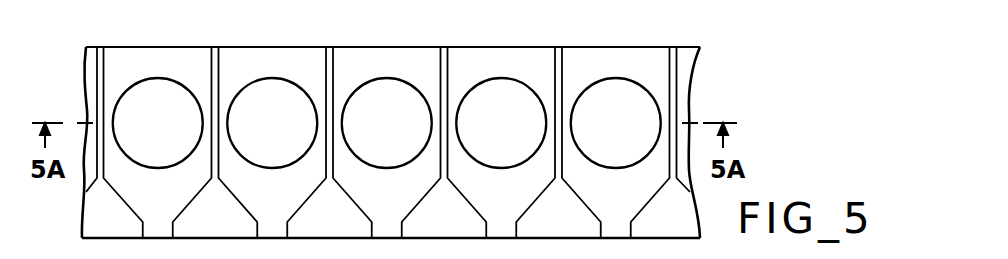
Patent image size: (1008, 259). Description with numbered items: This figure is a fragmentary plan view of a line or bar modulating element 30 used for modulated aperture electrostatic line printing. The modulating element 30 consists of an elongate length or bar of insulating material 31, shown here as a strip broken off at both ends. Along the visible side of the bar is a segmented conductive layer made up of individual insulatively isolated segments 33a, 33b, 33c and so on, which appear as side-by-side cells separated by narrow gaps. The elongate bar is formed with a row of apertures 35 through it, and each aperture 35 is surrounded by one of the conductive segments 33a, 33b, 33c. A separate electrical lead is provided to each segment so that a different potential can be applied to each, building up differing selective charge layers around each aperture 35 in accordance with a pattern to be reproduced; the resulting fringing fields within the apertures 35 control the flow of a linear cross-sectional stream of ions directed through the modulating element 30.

The modulating element 30 is at (676, 42).
The insulating material 31 is at (670, 229).
The conductive segment 33a is at (135, 46).
The conductive segment 33b is at (245, 46).
The conductive segment 33c is at (354, 46).
The aperture 35 is at (163, 136).